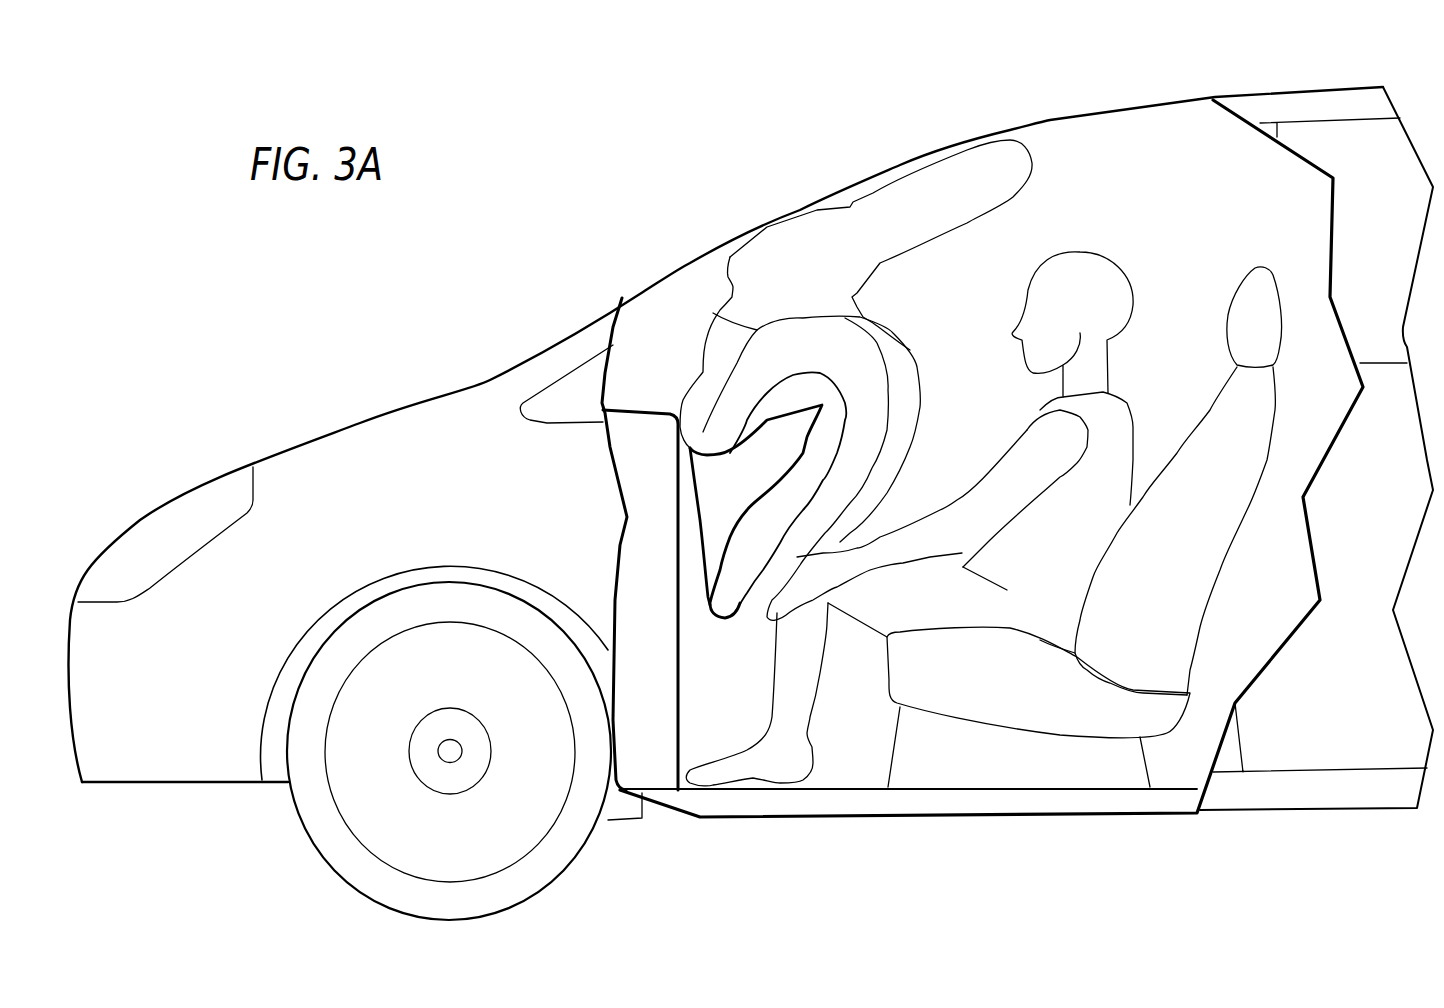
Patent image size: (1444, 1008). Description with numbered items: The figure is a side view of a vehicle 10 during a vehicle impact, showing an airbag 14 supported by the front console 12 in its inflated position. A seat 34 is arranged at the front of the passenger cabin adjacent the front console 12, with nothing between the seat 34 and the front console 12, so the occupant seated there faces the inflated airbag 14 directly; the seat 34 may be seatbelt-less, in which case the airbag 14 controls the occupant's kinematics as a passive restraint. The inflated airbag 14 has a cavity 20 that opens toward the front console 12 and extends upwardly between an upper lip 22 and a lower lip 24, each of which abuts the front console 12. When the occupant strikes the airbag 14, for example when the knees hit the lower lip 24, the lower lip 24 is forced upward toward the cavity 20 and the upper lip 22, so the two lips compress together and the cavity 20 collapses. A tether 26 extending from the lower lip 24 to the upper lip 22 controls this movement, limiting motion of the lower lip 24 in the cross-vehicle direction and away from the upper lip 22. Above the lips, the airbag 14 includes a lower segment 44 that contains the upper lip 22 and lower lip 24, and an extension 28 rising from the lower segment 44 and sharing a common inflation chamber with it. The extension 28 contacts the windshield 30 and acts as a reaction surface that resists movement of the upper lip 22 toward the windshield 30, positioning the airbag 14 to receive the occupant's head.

The vehicle 10 is at (1257, 67).
The front console 12 is at (643, 445).
The airbag 14 is at (1062, 207).
The cavity 20 is at (742, 470).
The upper lip 22 is at (703, 432).
The lower lip 24 is at (730, 597).
The tether 26 is at (695, 528).
The extension 28 is at (975, 165).
The windshield 30 is at (770, 220).
The seat 34 is at (1180, 557).
The lower segment 44 is at (930, 420).